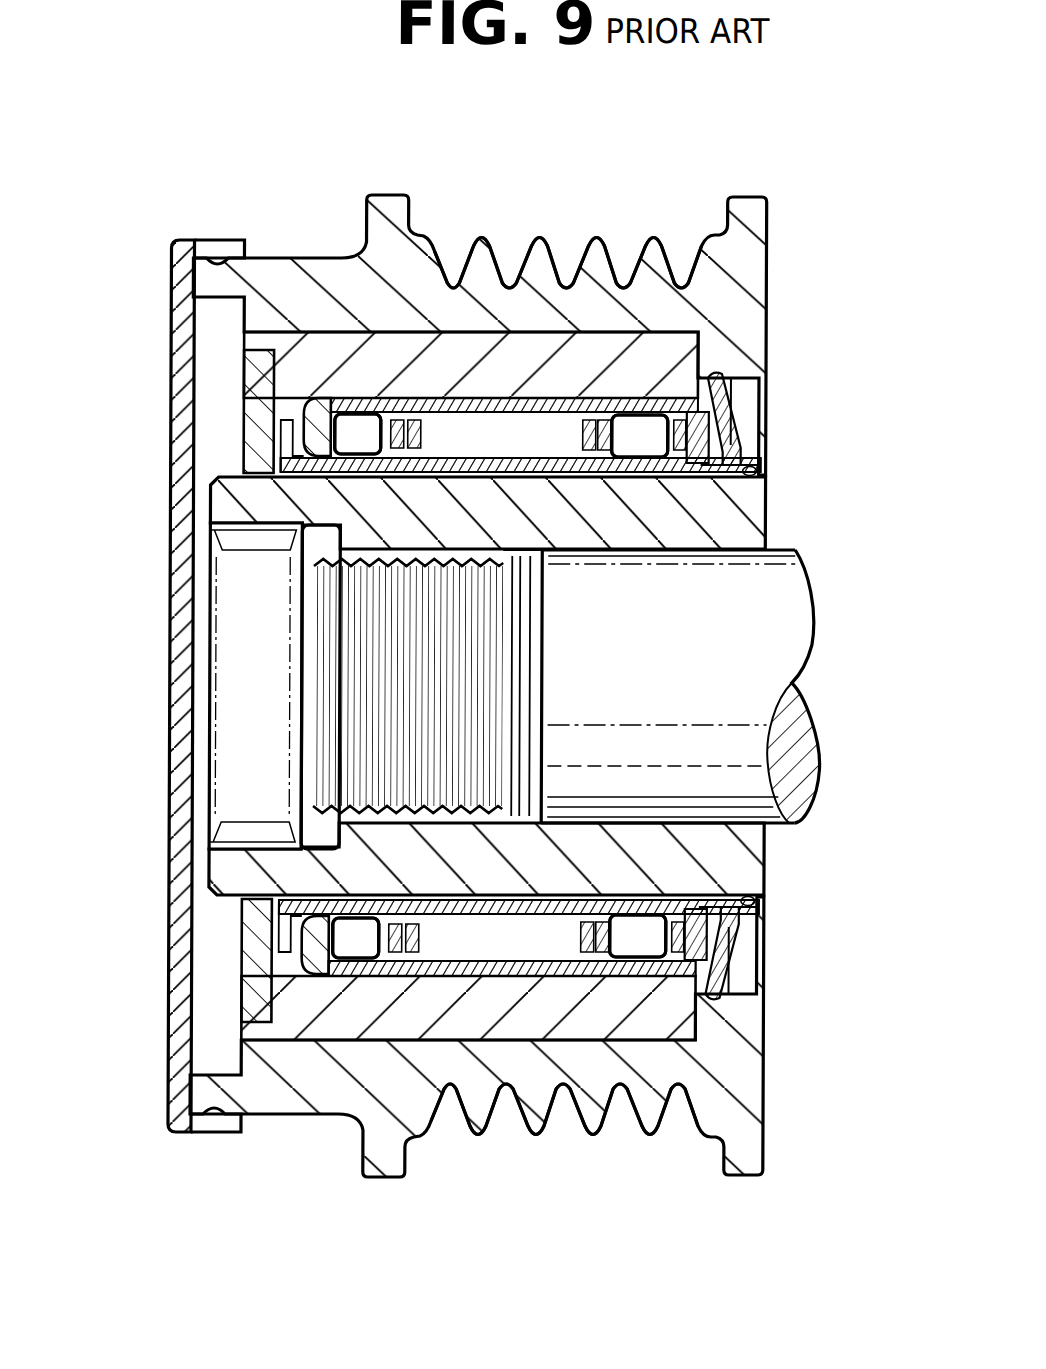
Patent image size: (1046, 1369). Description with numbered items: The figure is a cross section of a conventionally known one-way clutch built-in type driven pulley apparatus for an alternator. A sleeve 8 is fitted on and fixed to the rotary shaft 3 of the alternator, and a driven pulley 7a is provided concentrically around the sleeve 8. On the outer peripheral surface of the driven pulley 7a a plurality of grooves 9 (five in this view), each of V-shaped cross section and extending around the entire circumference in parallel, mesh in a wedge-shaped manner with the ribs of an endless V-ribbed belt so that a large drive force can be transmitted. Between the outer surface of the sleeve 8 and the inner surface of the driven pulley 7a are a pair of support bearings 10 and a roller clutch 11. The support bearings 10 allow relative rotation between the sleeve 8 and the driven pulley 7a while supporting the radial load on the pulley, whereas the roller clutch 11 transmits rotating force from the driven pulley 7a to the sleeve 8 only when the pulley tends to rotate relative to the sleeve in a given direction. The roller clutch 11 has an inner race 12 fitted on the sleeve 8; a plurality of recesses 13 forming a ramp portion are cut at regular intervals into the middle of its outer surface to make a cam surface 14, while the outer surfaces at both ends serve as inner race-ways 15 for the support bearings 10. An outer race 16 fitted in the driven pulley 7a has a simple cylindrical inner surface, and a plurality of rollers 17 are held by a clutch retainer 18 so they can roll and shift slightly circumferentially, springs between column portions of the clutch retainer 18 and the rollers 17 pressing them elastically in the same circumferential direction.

The rotary shaft 3 is at (763, 582).
The driven pulley 7a is at (748, 215).
The sleeve 8 is at (722, 517).
The grooves 9 is at (667, 235).
The support bearings 10 is at (357, 977).
The roller clutch 11 is at (515, 940).
The inner race 12 is at (636, 945).
The recesses 13 is at (455, 455).
The cam surface 14 is at (510, 457).
The inner race-ways 15 is at (230, 932).
The outer race 16 is at (620, 398).
The rollers 17 is at (547, 437).
The clutch retainer 18 is at (363, 937).